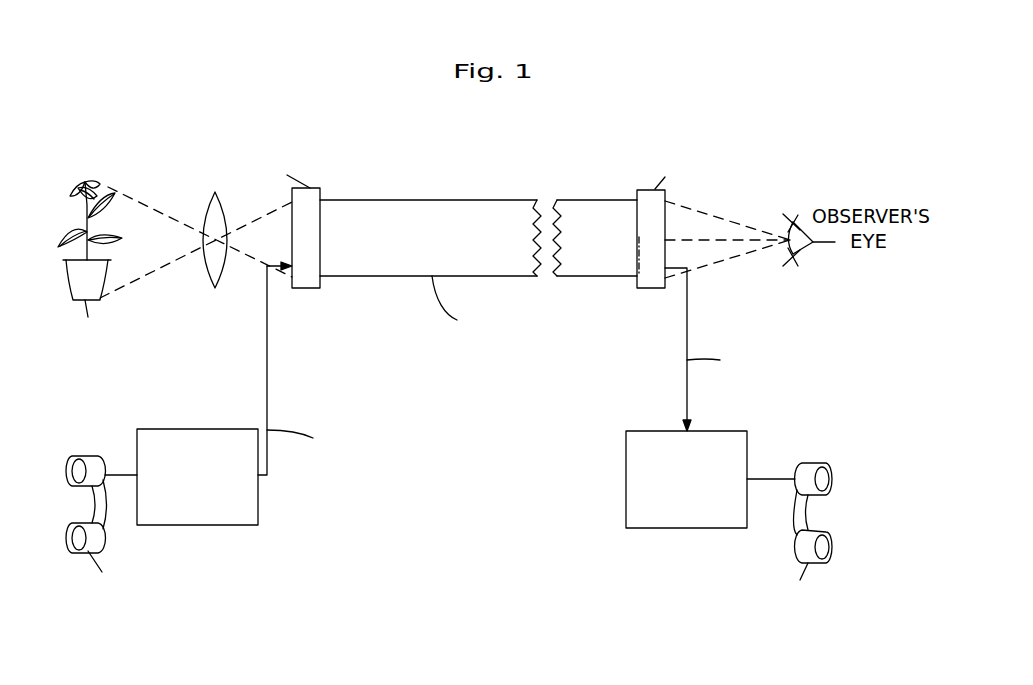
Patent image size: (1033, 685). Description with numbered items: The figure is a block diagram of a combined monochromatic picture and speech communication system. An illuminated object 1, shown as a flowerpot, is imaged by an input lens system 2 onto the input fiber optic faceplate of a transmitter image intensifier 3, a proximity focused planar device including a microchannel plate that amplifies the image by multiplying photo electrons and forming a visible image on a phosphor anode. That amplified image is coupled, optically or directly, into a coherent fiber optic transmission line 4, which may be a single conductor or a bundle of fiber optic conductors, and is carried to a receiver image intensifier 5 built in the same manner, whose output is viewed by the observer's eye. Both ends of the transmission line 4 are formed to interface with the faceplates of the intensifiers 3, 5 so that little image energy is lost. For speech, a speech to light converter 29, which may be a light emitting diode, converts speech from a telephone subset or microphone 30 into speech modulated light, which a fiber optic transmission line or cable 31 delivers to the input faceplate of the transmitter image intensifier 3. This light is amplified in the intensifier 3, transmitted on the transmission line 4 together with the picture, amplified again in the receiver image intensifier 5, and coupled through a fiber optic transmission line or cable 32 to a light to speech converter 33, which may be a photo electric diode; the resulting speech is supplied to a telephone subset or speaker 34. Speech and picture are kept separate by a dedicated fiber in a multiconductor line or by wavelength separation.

The illuminated object 1 is at (111, 270).
The input lens system 2 is at (216, 288).
The transmitter image intensifier 3 is at (302, 288).
The coherent fiber optic transmission line 4 is at (463, 277).
The receiver image intensifier 5 is at (645, 288).
The speech to light converter 29 is at (258, 510).
The telephone subset or microphone 30 is at (100, 537).
The fiber optic transmission line or cable 31 is at (267, 400).
The fiber optic transmission line or cable 32 is at (687, 386).
The light to speech converter 33 is at (670, 528).
The telephone subset or speaker 34 is at (823, 532).